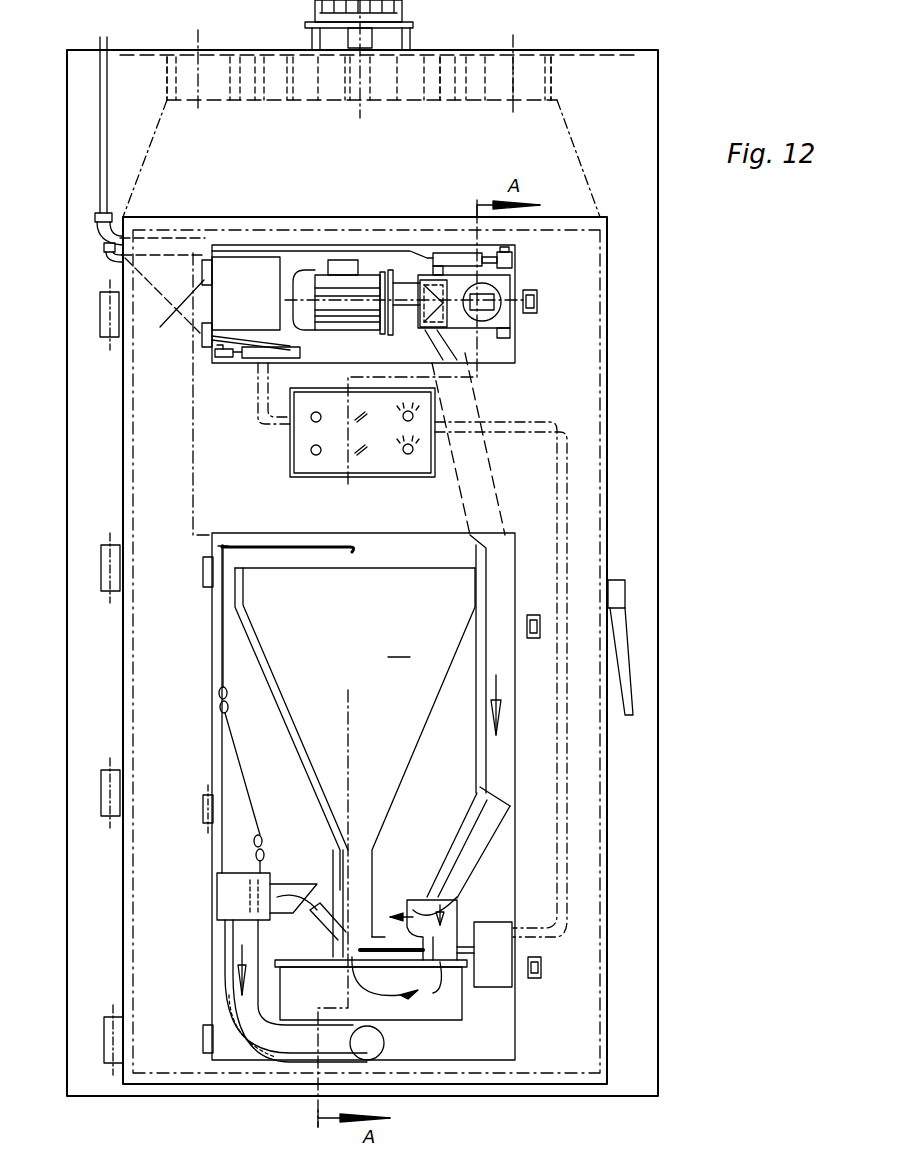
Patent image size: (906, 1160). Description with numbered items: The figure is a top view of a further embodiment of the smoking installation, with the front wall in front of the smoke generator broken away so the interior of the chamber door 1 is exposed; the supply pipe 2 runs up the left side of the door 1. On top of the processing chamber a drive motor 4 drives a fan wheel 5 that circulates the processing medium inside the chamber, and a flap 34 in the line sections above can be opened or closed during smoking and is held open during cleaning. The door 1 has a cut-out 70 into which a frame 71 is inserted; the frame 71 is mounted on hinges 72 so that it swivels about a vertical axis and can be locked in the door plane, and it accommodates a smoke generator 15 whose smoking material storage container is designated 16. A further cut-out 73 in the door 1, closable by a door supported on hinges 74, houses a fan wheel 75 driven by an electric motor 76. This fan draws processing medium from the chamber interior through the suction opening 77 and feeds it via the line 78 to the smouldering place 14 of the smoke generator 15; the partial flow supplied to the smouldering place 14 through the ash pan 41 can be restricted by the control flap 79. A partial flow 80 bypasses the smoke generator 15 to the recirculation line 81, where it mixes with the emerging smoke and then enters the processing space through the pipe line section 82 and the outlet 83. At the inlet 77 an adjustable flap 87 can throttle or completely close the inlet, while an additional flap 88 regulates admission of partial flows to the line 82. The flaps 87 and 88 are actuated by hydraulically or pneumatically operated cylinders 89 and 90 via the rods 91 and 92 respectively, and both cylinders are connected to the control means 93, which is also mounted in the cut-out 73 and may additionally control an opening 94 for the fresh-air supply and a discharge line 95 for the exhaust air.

The chamber door 1 is at (568, 255).
The supply pipe 2 is at (107, 325).
The drive motor 4 is at (392, 17).
The fan wheel 5 is at (441, 72).
The smouldering place 14 is at (358, 957).
The smoke generator 15 is at (407, 777).
The smoking material storage container 16 is at (363, 796).
The flap 34 is at (150, 151).
The ash pan 41 is at (433, 1005).
The cut-out 70 is at (512, 877).
The frame 71 is at (218, 970).
The hinges 72 is at (210, 815).
The further cut-out 73 is at (507, 348).
The hinges 74 is at (207, 344).
The fan wheel 75 is at (432, 315).
The electric motor 76 is at (320, 307).
The suction opening 77 is at (462, 297).
The line 78 is at (495, 553).
The control flap 79 is at (442, 937).
The partial flow 80 is at (413, 915).
The recirculation line 81 is at (288, 890).
The pipe line section 82 is at (247, 1022).
The outlet 83 is at (372, 1040).
The adjustable flap 87 is at (537, 298).
The additional flap 88 is at (263, 896).
The cylinder 89 is at (467, 259).
The cylinder 90 is at (267, 353).
The rod 91 is at (515, 253).
The rod 92 is at (240, 743).
The control means 93 is at (304, 450).
The opening 94 is at (532, 70).
The discharge line 95 is at (192, 70).